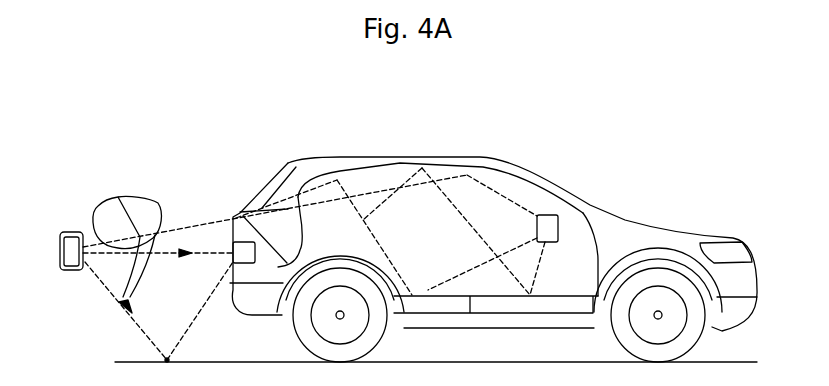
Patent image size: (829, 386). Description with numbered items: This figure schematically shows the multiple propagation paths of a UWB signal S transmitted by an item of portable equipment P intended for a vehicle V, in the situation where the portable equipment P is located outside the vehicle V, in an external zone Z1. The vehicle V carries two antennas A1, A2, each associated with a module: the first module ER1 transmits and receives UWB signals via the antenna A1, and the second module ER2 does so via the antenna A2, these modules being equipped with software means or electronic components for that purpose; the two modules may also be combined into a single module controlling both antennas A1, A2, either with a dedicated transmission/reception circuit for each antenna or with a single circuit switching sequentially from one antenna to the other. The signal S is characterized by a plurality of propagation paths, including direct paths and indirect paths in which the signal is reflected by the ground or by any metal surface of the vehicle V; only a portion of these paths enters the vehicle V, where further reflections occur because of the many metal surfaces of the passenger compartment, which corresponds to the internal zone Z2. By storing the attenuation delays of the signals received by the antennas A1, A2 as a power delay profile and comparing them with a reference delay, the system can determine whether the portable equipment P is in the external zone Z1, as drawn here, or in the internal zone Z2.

The vehicle V is at (572, 164).
The antenna A1 is at (191, 193).
The first module ER1 is at (236, 219).
The antenna A2 is at (626, 196).
The second module ER2 is at (558, 216).
The item of portable equipment P is at (75, 233).
The UWB signal S is at (118, 198).
The external zone Z1 is at (267, 268).
The internal zone Z2 is at (390, 231).